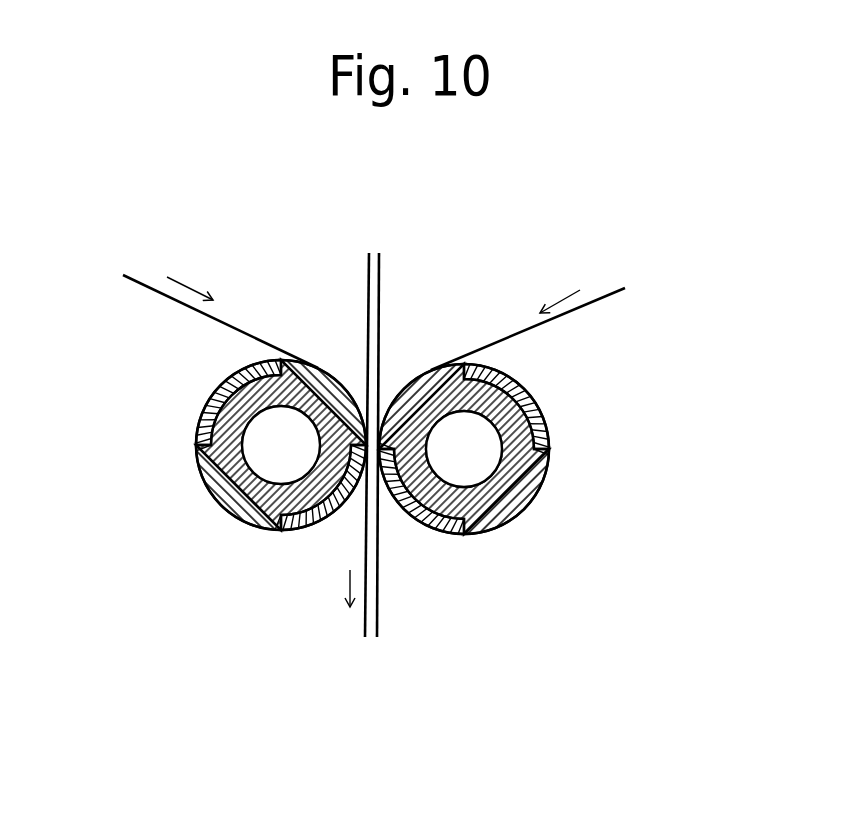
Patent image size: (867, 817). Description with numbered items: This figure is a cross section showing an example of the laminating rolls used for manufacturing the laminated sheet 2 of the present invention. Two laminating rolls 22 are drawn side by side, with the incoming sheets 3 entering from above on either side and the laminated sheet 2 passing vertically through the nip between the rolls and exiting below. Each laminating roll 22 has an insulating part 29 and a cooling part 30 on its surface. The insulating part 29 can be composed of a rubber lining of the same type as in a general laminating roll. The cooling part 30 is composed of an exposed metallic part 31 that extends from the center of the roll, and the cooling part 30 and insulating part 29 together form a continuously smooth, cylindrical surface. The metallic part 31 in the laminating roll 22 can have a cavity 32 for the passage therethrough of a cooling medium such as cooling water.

The laminated sheet 2 is at (370, 282).
The metal sheet 3 is at (147, 286).
The laminating roll 22 is at (533, 528).
The insulating part 29 is at (196, 430).
The cooling part 30 is at (283, 537).
The metallic part 31 is at (538, 403).
The cavity 32 is at (477, 462).